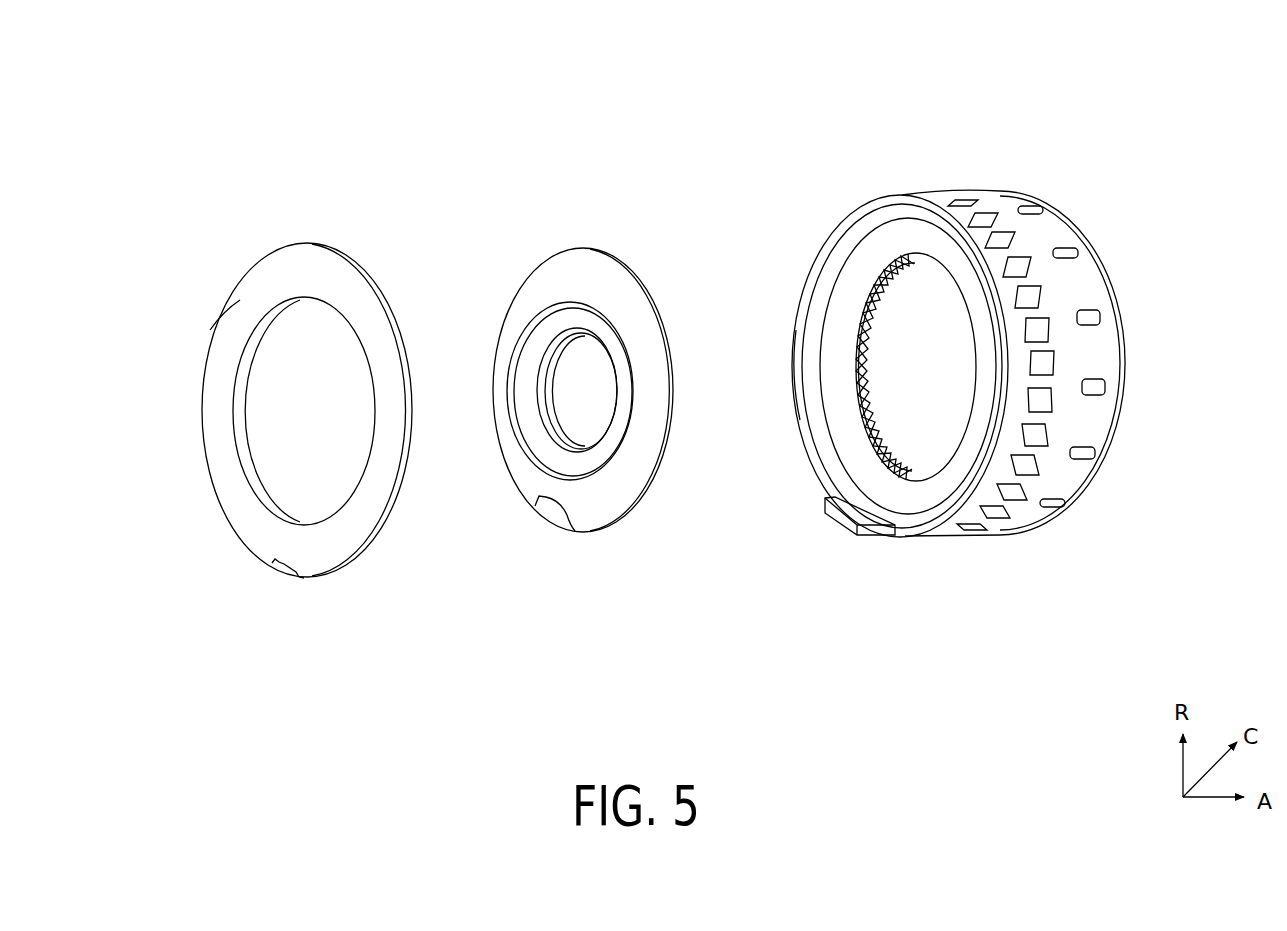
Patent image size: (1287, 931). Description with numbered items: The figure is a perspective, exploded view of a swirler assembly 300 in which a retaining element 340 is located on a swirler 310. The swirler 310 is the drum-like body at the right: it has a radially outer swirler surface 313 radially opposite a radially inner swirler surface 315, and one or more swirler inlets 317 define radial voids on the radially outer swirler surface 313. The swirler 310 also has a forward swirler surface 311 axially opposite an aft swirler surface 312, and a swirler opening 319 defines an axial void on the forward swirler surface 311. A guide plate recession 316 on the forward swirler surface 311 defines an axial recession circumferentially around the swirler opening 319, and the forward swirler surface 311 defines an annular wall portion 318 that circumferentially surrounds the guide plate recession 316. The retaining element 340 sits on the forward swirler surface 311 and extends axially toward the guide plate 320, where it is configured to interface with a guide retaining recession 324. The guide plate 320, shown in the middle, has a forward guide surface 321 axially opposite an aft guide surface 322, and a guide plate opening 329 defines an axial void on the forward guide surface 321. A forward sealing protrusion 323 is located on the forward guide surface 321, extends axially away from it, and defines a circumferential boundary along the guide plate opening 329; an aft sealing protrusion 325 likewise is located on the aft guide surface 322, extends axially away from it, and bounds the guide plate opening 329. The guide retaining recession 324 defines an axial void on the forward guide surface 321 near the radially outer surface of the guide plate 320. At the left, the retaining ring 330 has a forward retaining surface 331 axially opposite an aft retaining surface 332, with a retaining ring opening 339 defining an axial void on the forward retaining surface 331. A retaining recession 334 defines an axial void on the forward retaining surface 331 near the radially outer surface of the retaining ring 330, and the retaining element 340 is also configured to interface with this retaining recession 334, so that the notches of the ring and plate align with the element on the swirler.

The swirler assembly 300 is at (273, 128).
The swirler 310 is at (1085, 192).
The forward swirler surface 311 is at (866, 206).
The aft swirler surface 312 is at (1118, 300).
The radially outer swirler surface 313 is at (1010, 198).
The radially inner swirler surface 315 is at (866, 362).
The guide plate recession 316 is at (925, 253).
The swirler inlets 317 is at (1068, 253).
The annular wall portion 318 is at (818, 424).
The swirler opening 319 is at (893, 323).
The guide plate 320 is at (633, 250).
The forward guide surface 321 is at (538, 282).
The aft guide surface 322 is at (679, 425).
The forward sealing protrusion 323 is at (525, 410).
The guide retaining recession 324 is at (553, 514).
The aft sealing protrusion 325 is at (573, 338).
The guide plate opening 329 is at (572, 412).
The retaining ring 330 is at (353, 235).
The forward retaining surface 331 is at (217, 351).
The aft retaining surface 332 is at (403, 328).
The retaining recession 334 is at (282, 575).
The retaining ring opening 339 is at (263, 445).
The retaining element 340 is at (846, 530).